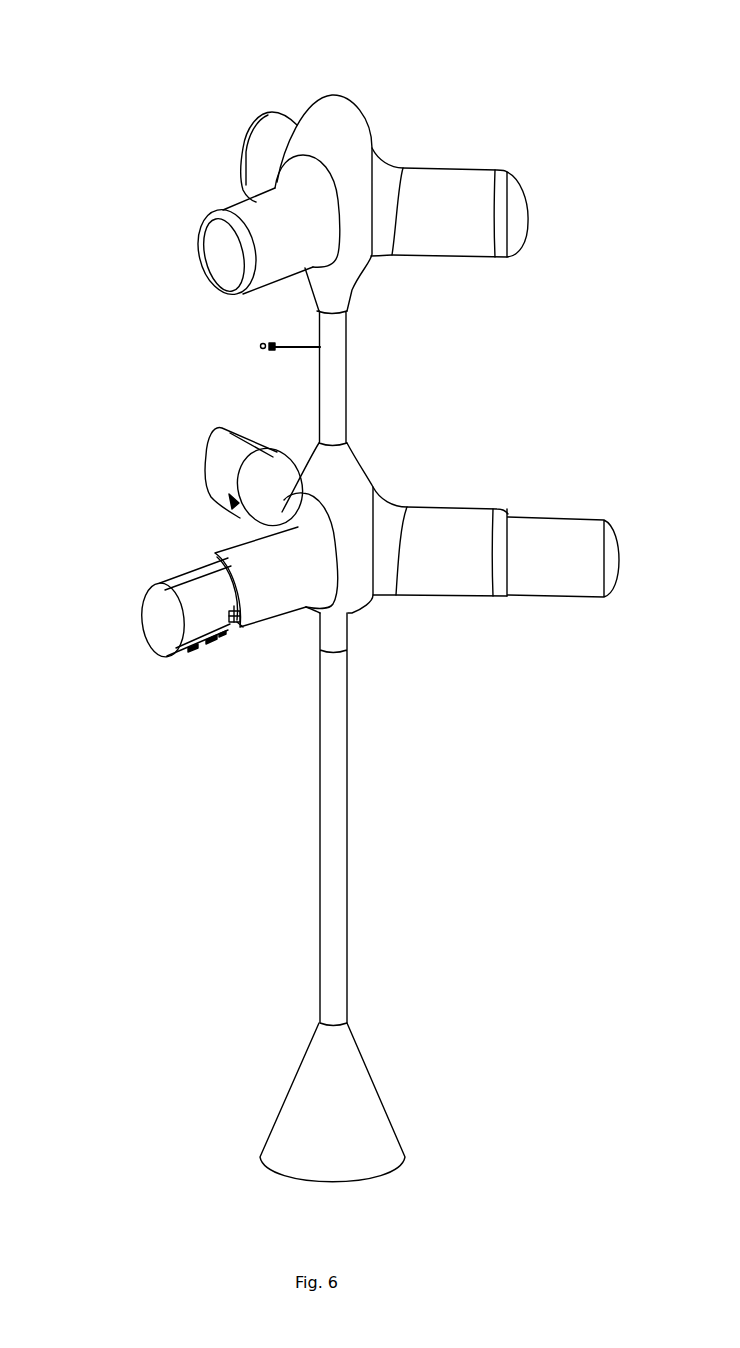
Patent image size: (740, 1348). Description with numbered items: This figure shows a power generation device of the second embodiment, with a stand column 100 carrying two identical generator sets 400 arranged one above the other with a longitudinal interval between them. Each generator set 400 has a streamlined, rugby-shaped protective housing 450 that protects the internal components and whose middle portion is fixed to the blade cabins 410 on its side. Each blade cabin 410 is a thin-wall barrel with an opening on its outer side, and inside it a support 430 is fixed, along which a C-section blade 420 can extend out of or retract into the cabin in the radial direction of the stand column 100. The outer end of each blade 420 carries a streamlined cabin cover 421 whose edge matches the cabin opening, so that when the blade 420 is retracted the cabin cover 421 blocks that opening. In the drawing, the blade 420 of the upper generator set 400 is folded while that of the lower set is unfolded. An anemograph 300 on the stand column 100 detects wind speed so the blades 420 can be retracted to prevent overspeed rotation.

The stand column 100 is at (333, 865).
The anemograph 300 is at (320, 347).
The generator set 400 is at (283, 170).
The blade cabin 410 is at (430, 210).
The blade 420 is at (528, 230).
The cabin cover 421 is at (152, 628).
The support 430 is at (228, 633).
The protective housing 450 is at (338, 138).